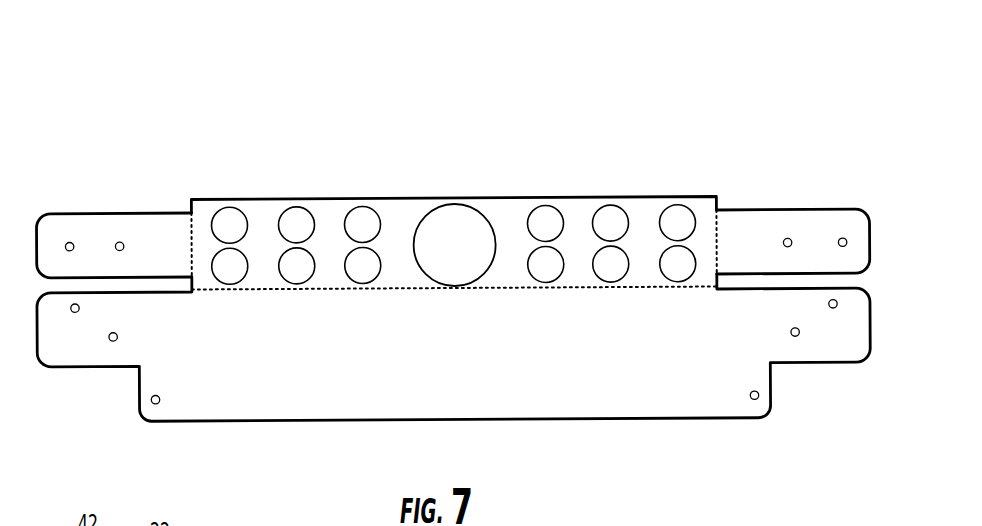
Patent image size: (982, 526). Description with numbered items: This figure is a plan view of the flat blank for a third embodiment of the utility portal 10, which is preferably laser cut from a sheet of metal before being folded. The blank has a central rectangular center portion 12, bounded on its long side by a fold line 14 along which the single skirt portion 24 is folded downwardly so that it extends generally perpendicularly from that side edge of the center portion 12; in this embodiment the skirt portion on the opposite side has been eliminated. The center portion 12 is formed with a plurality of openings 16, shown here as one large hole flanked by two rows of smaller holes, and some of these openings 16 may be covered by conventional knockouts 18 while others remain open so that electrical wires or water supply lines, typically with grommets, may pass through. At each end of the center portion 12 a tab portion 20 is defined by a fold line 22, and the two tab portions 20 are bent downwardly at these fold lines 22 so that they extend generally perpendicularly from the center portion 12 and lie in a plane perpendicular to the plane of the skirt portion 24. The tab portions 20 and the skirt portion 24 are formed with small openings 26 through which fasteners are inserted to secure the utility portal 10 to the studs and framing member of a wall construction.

The utility portal 10 is at (658, 78).
The center portion 12 is at (647, 210).
The fold line 14 is at (395, 288).
The opening 16 is at (312, 260).
The knockout 18 is at (470, 222).
The tab portion 20 is at (120, 222).
The fold line 22 is at (207, 226).
The skirt portion 24 is at (647, 400).
The opening 26 is at (70, 242).